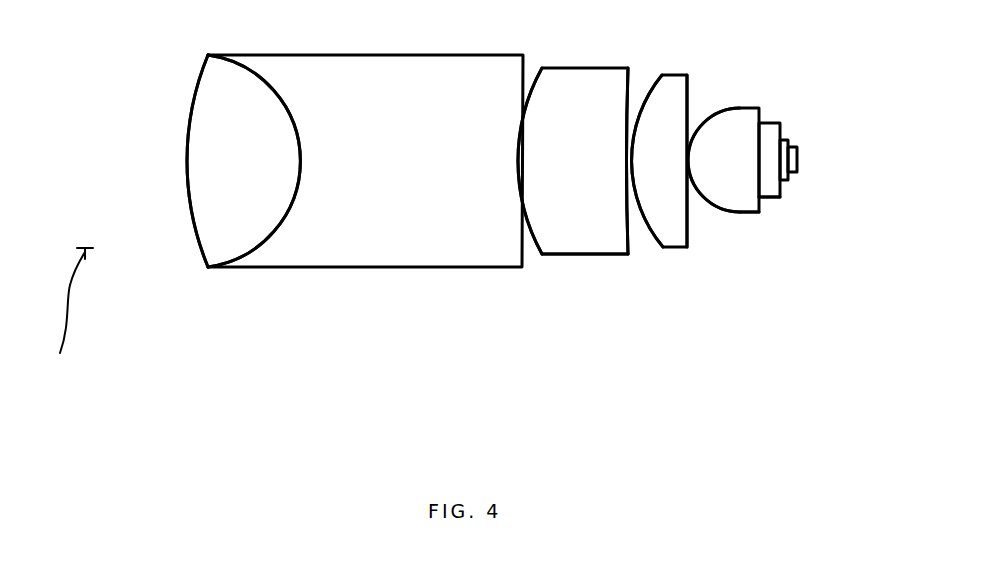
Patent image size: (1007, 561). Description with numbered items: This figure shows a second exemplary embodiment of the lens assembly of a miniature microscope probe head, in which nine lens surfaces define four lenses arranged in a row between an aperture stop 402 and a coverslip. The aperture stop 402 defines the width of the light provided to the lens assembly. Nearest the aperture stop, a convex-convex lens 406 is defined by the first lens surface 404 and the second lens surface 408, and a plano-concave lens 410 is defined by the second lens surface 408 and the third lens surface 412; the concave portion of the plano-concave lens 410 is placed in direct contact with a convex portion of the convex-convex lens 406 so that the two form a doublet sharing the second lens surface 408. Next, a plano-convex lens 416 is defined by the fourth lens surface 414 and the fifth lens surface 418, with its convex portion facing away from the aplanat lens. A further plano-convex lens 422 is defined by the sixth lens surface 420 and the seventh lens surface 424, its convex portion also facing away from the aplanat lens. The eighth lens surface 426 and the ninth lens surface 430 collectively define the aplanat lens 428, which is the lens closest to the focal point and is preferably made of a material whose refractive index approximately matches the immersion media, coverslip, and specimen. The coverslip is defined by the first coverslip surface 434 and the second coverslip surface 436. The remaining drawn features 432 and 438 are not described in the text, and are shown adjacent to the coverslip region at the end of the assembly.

The aperture stop 402 is at (67, 317).
The first lens surface 404 is at (197, 225).
The convex-convex lens 406 is at (227, 227).
The second lens surface 408 is at (277, 237).
The plano-concave lens 410 is at (358, 237).
The third lens surface 412 is at (520, 237).
The fourth lens surface 414 is at (537, 253).
The plano-convex lens 416 is at (587, 240).
The fifth lens surface 418 is at (624, 228).
The sixth lens surface 420 is at (653, 247).
The plano-convex lens 422 is at (668, 223).
The seventh lens surface 424 is at (690, 223).
The eighth lens surface 426 is at (725, 192).
The aplanat lens 428 is at (707, 205).
The ninth lens surface 430 is at (742, 212).
The flange 432 is at (772, 123).
The first coverslip surface 434 is at (783, 137).
The second coverslip surface 436 is at (803, 148).
The flange edge 438 is at (782, 190).